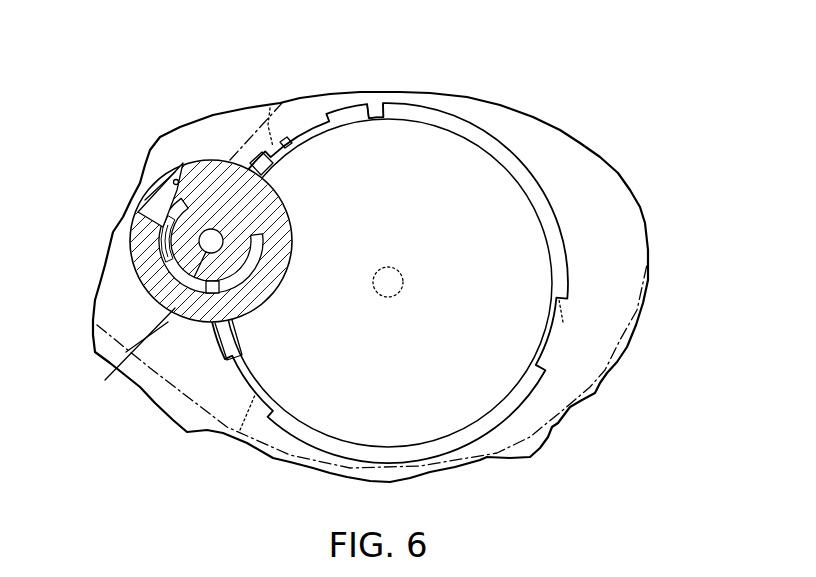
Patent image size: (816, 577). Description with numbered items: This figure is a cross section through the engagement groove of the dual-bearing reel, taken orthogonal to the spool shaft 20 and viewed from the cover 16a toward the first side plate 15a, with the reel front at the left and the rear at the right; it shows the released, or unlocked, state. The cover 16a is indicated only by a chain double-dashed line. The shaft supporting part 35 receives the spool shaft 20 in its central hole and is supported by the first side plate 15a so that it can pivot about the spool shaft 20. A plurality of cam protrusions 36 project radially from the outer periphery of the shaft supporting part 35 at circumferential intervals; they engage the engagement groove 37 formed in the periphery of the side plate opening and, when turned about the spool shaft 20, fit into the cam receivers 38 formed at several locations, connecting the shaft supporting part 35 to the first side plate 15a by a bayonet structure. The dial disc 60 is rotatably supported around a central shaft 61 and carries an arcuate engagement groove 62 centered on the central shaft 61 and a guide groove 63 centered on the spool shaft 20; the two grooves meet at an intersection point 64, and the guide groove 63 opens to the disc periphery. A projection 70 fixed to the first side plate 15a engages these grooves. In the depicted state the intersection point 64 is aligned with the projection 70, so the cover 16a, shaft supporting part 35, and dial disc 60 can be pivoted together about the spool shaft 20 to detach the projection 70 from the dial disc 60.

The first side plate 15a is at (600, 155).
The cover 16a is at (125, 397).
The spool shaft 20 is at (401, 272).
The shaft supporting part 35 is at (411, 120).
The cam protrusions 36 is at (270, 110).
The engagement groove 37 is at (380, 113).
The cam receivers 38 is at (303, 130).
The dial disc 60 is at (223, 160).
The central shaft 61 is at (140, 352).
The engagement groove 62 is at (163, 265).
The guide groove 63 is at (177, 167).
The intersection point 64 is at (157, 232).
The projection 70 is at (160, 220).